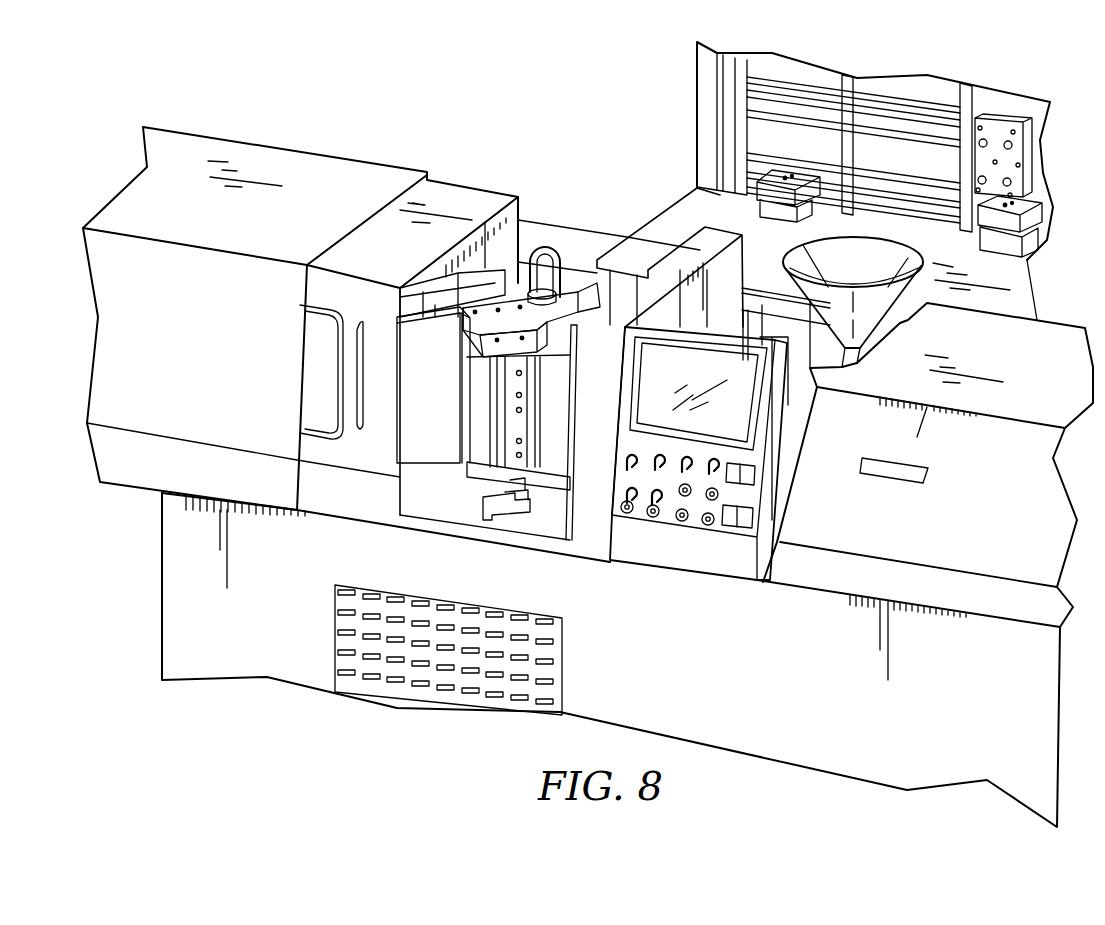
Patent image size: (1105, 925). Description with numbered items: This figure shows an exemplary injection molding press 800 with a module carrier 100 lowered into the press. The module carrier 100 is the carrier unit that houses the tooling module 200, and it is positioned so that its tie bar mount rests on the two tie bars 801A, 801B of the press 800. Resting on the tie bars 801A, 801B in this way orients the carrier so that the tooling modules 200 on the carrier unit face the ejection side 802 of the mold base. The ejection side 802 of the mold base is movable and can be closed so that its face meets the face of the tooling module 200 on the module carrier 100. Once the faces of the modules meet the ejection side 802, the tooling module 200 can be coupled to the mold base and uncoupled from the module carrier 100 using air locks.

The injection molding press 800 is at (313, 180).
The tie bar 801A is at (586, 293).
The tie bar 801B is at (545, 352).
The ejection side 802 is at (413, 433).
The tooling module 200 is at (514, 421).
The module carrier 100 is at (557, 410).